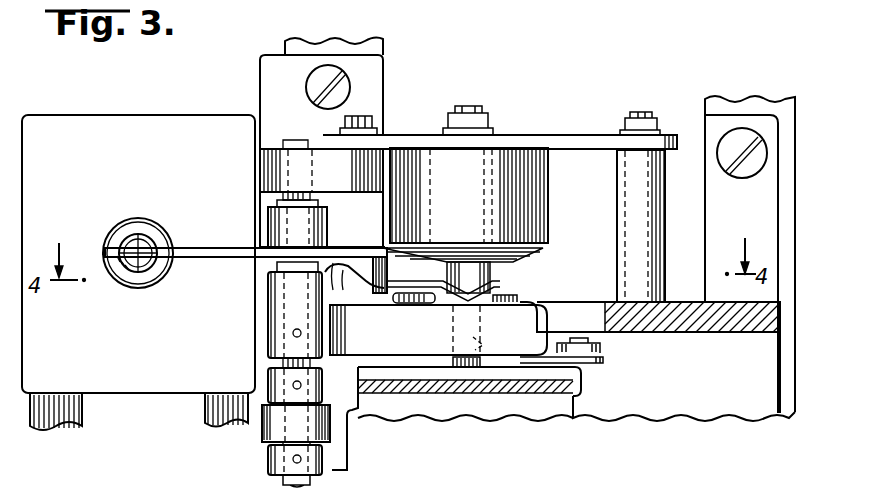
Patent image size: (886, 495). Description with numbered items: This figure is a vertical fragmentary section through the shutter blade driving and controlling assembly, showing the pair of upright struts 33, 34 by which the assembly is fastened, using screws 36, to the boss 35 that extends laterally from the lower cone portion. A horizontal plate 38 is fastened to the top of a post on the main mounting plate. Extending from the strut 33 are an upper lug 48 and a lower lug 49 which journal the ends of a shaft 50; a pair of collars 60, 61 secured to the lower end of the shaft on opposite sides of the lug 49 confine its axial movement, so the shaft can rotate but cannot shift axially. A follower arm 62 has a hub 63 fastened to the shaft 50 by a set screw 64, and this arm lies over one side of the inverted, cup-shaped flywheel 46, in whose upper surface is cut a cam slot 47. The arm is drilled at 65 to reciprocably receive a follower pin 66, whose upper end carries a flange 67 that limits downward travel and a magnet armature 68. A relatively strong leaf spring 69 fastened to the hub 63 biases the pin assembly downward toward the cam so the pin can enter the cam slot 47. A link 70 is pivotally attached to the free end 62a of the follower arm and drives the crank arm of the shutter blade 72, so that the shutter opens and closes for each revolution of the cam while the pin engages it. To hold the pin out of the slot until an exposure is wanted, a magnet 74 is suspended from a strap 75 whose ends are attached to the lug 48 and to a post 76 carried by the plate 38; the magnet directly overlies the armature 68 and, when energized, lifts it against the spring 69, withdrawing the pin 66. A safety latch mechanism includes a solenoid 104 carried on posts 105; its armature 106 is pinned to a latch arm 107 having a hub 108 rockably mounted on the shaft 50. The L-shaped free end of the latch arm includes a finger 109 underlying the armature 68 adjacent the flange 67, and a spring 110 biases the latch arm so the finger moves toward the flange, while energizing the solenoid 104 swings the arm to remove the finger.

The upright strut 33 is at (372, 80).
The upright strut 34 is at (713, 133).
The boss 35 is at (373, 50).
The screw 36 is at (320, 80).
The horizontal plate 38 is at (703, 320).
The flywheel 46 is at (416, 408).
The cam slot 47 is at (557, 375).
The lug 48 is at (275, 165).
The lug 49 is at (263, 428).
The shaft 50 is at (315, 197).
The collar 60 is at (270, 383).
The collar 61 is at (240, 477).
The follower arm 62 is at (432, 351).
The free end of follower arm 62a is at (603, 358).
The hub 63 is at (273, 305).
The set screw 64 is at (293, 333).
The drilled hole 65 is at (478, 344).
The follower pin 66 is at (462, 370).
The flange 67 is at (497, 297).
The magnet armature 68 is at (530, 256).
The leaf spring 69 is at (430, 277).
The link 70 is at (600, 348).
The shutter blade 72 is at (633, 493).
The magnet 74 is at (535, 183).
The strap 75 is at (537, 140).
The post 76 is at (655, 200).
The solenoid 104 is at (130, 125).
The post 105 is at (60, 412).
The solenoid armature 106 is at (128, 228).
The latch arm 107 is at (230, 253).
The hub 108 is at (268, 225).
The latch finger 109 is at (423, 303).
The spring 110 is at (118, 268).